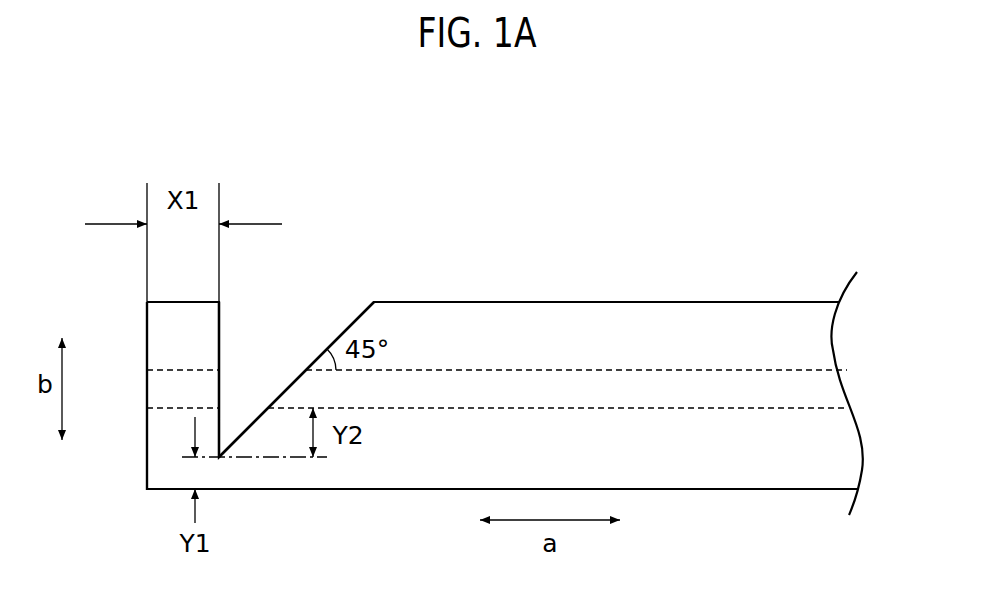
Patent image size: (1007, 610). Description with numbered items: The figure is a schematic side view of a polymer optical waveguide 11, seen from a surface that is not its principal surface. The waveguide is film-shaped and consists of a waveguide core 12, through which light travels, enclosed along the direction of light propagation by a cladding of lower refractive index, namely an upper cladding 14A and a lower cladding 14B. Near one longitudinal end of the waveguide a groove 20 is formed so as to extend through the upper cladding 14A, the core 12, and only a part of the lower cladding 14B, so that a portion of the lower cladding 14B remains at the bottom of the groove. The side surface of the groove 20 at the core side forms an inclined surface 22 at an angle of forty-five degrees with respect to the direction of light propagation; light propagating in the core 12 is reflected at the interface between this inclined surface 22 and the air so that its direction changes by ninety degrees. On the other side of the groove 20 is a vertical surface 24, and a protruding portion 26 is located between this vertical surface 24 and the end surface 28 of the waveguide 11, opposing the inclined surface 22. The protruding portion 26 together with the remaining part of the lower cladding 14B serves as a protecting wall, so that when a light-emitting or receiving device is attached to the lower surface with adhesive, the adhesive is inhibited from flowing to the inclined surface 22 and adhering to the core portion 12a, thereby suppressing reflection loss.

The polymer optical waveguide 11 is at (455, 257).
The waveguide core 12 is at (553, 383).
The core portion 12a is at (288, 388).
The upper cladding 14A is at (727, 315).
The lower cladding 14B is at (760, 460).
The groove 20 is at (310, 302).
The inclined surface 22 is at (345, 331).
The vertical surface 24 is at (219, 322).
The protruding portion 26 is at (157, 337).
The end surface 28 is at (147, 455).